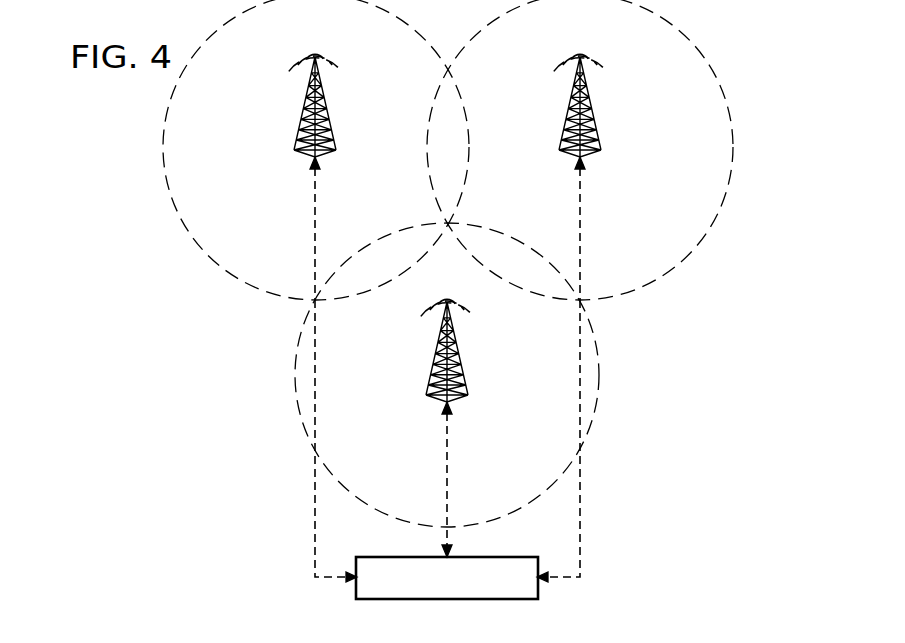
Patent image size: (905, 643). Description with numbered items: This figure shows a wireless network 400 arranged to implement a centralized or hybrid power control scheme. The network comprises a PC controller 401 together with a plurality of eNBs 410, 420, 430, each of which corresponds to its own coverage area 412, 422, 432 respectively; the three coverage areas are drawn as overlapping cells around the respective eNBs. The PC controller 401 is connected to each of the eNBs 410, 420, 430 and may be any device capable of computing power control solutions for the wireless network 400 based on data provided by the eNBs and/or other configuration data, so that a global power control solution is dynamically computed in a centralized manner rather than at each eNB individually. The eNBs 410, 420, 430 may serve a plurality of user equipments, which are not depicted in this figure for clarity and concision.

The wireless network 400 is at (216, 321).
The PC controller 401 is at (539, 590).
The eNB 410 is at (290, 56).
The coverage area 412 is at (161, 138).
The eNB 420 is at (606, 55).
The coverage area 422 is at (693, 252).
The eNB 430 is at (470, 290).
The coverage area 432 is at (295, 378).